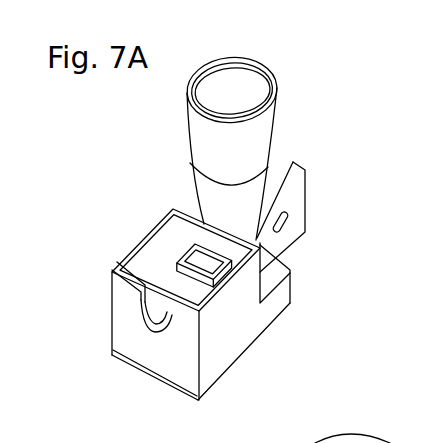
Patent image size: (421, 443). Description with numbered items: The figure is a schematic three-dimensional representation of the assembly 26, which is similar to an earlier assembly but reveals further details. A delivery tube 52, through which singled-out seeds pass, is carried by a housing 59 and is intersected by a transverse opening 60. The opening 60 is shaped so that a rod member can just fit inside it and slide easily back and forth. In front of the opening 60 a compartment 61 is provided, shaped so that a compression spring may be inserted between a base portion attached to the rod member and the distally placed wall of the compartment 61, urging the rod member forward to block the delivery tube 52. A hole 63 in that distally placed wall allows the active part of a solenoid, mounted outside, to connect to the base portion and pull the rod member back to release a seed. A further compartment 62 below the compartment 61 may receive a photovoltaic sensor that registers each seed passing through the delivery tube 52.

The assembly 26 is at (333, 122).
The delivery tube 52 is at (187, 143).
The housing 59 is at (247, 328).
The opening 60 is at (172, 287).
The compartment 61 is at (190, 270).
The compartment 62 is at (188, 373).
The hole 63 is at (150, 313).